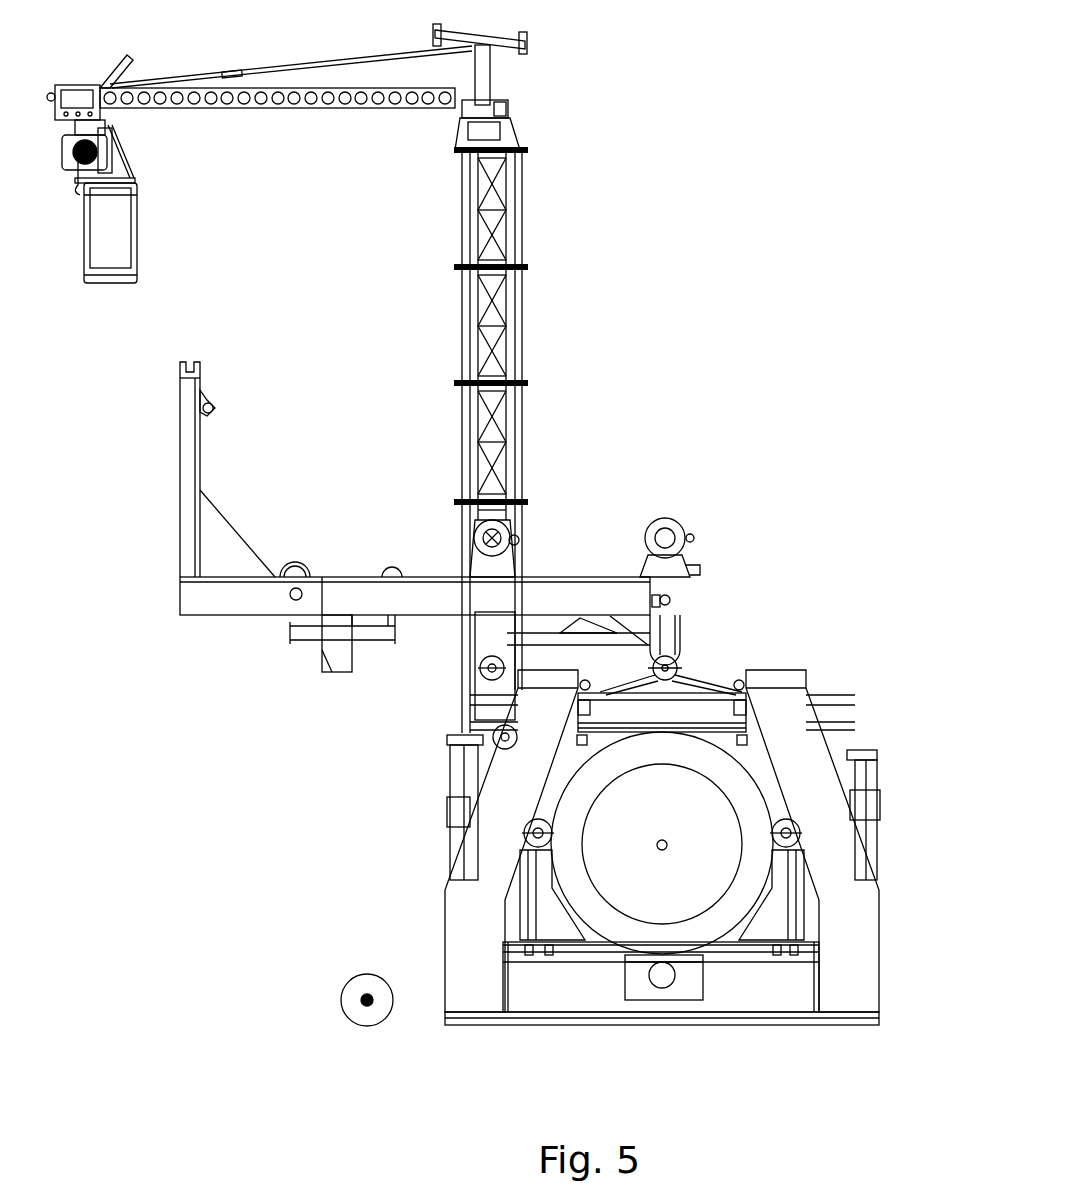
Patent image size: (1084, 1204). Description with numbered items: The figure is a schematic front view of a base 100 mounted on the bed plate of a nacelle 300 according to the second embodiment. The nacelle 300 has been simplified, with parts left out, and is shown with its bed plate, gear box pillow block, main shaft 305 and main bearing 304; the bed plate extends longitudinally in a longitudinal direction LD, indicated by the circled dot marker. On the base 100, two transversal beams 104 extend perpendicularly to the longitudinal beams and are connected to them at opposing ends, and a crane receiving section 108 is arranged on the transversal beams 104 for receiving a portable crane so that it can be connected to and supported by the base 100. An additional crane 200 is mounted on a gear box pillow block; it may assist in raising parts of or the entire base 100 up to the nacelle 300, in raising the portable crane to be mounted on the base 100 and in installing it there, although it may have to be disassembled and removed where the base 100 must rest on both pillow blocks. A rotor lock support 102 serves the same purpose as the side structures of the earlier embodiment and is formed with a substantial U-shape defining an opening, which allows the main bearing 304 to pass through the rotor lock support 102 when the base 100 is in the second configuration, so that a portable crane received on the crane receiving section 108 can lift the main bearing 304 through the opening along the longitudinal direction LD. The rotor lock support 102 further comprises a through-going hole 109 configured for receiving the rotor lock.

The base 100 is at (296, 428).
The rotor lock support 102 is at (596, 992).
The transversal beams 104 is at (710, 710).
The crane receiving section 108 is at (116, 454).
The through-going hole 109 is at (663, 986).
The additional crane 200 is at (607, 325).
The nacelle 300 is at (631, 846).
The main bearing 304 is at (545, 921).
The main shaft 305 is at (745, 876).
The longitudinal direction LD is at (344, 1011).